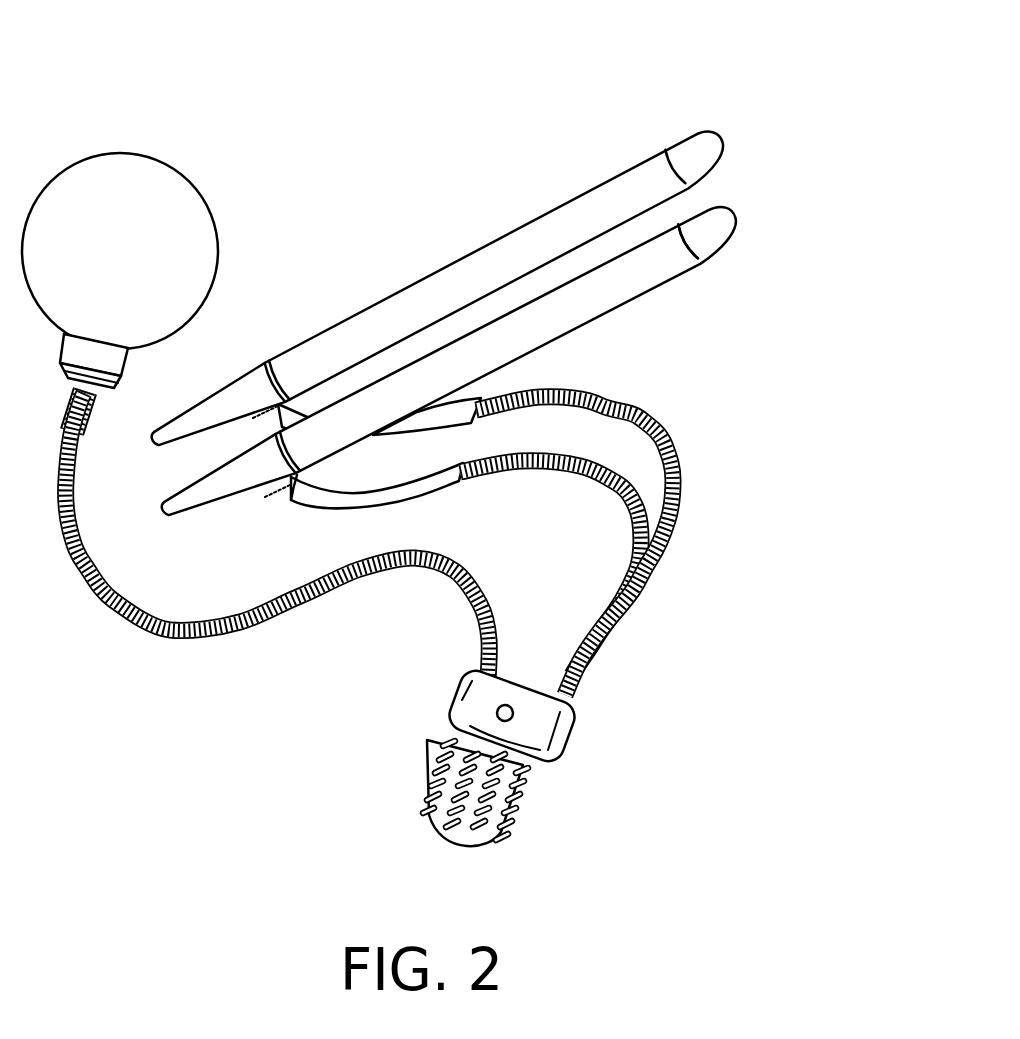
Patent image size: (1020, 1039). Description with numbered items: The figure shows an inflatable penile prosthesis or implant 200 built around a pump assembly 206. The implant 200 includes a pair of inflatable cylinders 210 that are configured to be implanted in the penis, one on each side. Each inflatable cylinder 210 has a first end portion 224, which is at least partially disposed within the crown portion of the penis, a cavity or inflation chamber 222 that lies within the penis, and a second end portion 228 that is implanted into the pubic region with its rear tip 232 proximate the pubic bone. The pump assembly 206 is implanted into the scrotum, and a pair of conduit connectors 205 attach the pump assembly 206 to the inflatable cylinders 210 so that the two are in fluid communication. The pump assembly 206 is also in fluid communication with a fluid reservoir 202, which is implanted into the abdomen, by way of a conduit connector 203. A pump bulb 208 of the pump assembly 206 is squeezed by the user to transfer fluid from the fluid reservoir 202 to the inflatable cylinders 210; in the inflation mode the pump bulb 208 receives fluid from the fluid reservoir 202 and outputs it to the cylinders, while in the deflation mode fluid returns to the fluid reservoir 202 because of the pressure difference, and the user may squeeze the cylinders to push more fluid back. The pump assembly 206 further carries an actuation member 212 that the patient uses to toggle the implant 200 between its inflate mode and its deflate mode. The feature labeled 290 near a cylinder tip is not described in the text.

The inflatable penile prosthesis 200 is at (138, 34).
The fluid reservoir 202 is at (162, 186).
The conduit connector 203 is at (213, 637).
The conduit connectors 205 is at (590, 477).
The pump assembly 206 is at (523, 720).
The pump bulb 208 is at (500, 797).
The inflatable cylinders 210 is at (450, 320).
The actuation member 212 is at (497, 716).
The inflation chamber 222 is at (430, 297).
The first end portion 224 is at (688, 160).
The second end portion 228 is at (237, 398).
The rear tip 232 is at (160, 440).
The tip indicator 290 is at (717, 238).